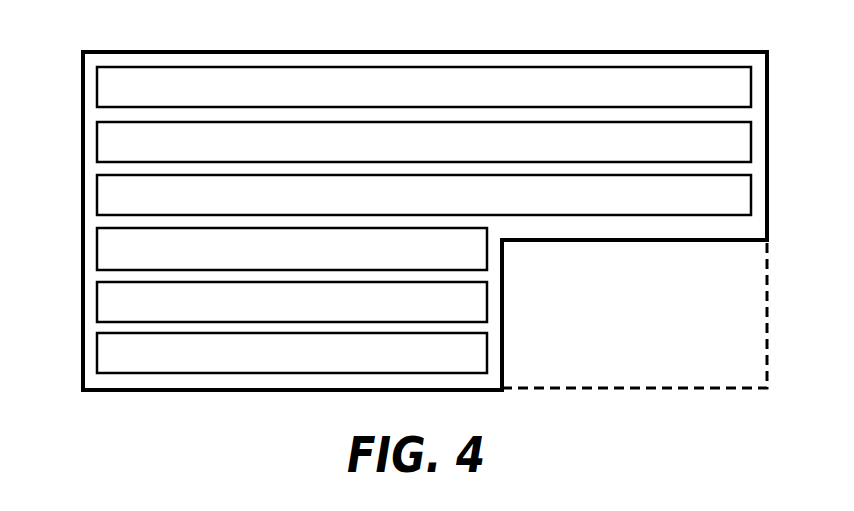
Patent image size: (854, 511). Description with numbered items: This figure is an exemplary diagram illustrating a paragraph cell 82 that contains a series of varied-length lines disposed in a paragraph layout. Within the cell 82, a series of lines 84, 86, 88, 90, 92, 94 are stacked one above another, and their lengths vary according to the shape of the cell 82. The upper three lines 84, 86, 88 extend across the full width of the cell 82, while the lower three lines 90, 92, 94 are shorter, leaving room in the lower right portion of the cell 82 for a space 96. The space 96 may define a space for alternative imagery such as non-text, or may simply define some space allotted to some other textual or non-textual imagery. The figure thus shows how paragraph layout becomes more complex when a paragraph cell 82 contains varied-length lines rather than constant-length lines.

The cell 82 is at (187, 45).
The line 84 is at (752, 87).
The line 86 is at (752, 142).
The line 88 is at (752, 196).
The line 90 is at (97, 248).
The line 92 is at (97, 300).
The line 94 is at (97, 352).
The space 96 is at (741, 326).